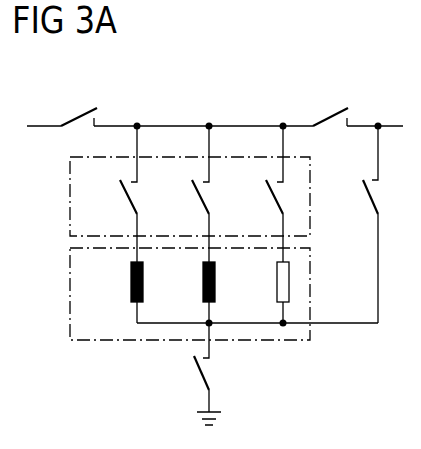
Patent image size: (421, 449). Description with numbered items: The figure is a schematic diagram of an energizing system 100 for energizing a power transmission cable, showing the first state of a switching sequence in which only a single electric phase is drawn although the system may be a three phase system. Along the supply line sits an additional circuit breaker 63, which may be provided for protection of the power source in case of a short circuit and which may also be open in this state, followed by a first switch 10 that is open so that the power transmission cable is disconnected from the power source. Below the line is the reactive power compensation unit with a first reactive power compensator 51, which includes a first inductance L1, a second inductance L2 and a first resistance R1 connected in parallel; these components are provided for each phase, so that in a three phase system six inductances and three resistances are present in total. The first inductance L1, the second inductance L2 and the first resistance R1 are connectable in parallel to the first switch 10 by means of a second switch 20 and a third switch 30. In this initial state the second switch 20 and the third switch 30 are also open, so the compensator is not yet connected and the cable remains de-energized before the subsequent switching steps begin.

The energizing system 100 is at (270, 78).
The additional circuit breaker 63 is at (79, 108).
The first switch 10 is at (333, 111).
The third switch 30 is at (70, 190).
The first reactive power compensator 51 is at (70, 290).
The second switch 20 is at (367, 198).
The first inductance L1 is at (130, 280).
The second inductance L2 is at (202, 280).
The first resistance R1 is at (276, 280).